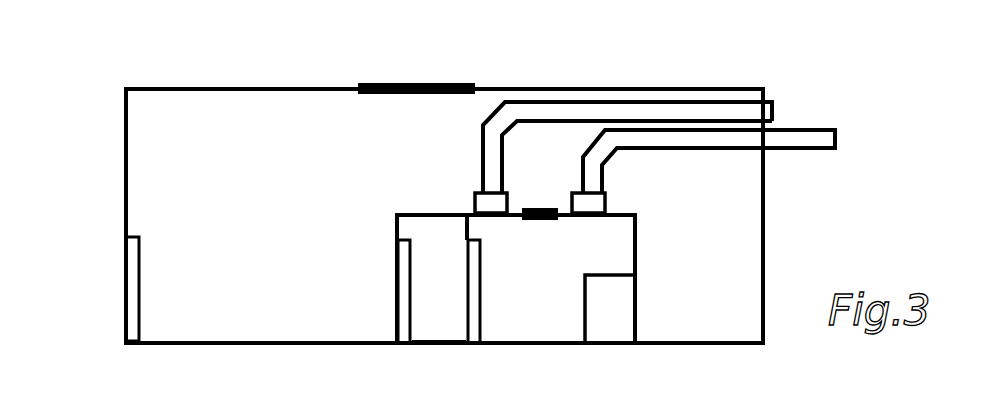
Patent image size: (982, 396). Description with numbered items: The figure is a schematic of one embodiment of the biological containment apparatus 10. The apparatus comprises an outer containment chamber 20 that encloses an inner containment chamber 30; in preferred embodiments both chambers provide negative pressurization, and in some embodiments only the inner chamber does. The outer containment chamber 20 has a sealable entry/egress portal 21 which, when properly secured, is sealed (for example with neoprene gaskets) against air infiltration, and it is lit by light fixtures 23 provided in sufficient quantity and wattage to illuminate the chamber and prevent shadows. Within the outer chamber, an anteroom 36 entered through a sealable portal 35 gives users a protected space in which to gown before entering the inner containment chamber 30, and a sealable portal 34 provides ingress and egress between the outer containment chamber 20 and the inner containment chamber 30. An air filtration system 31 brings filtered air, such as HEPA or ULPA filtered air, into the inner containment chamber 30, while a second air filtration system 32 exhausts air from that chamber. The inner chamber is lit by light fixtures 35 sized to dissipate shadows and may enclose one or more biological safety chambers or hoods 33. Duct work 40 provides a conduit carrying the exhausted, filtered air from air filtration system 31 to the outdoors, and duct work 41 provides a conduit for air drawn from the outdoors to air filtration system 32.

The biological containment apparatus 10 is at (398, 210).
The outer containment chamber 20 is at (110, 188).
The sealable entry/egress portal 21 is at (117, 304).
The light fixture 23 is at (416, 77).
The inner containment chamber 30 is at (570, 279).
The air filtration system 31 is at (507, 199).
The air filtration system 32 is at (608, 199).
The biological safety chamber/hood 33 is at (580, 322).
The sealable portal 34 is at (439, 318).
The light fixture 35 is at (459, 275).
The anteroom 36 is at (432, 262).
The duct work 40 is at (557, 127).
The duct work 41 is at (667, 150).